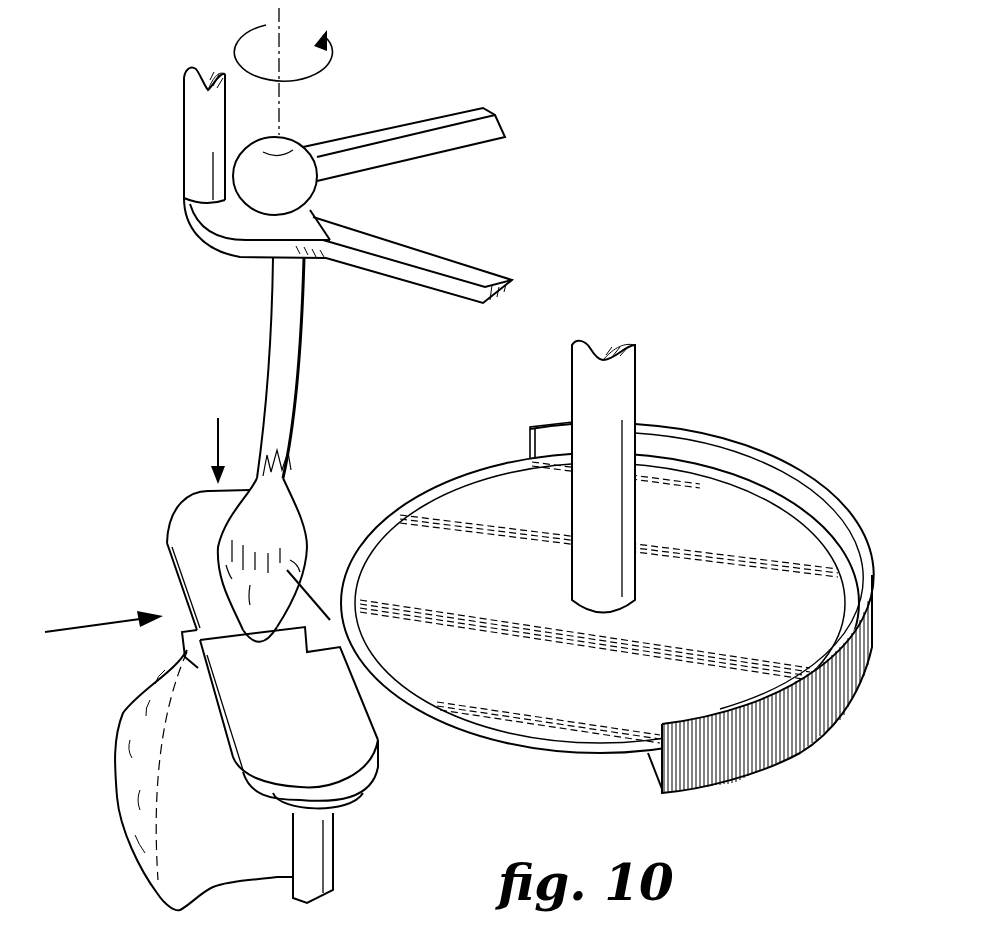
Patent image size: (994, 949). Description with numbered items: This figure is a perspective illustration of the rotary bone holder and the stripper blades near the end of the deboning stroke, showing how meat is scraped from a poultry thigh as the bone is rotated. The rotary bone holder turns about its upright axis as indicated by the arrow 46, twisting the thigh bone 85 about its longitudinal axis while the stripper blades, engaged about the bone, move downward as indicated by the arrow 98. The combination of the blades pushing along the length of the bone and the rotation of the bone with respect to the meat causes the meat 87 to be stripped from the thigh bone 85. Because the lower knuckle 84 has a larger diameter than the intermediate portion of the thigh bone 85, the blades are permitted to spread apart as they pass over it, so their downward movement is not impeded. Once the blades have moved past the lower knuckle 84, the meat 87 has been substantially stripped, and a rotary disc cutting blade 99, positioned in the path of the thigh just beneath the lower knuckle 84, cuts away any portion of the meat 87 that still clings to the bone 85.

The arrow 46 is at (234, 50).
The thigh bone 85 is at (272, 314).
The arrows 98 is at (211, 446).
The lower knuckle 84 is at (287, 573).
The meat 87 is at (197, 893).
The rotary disc cutting blade 99 is at (727, 508).